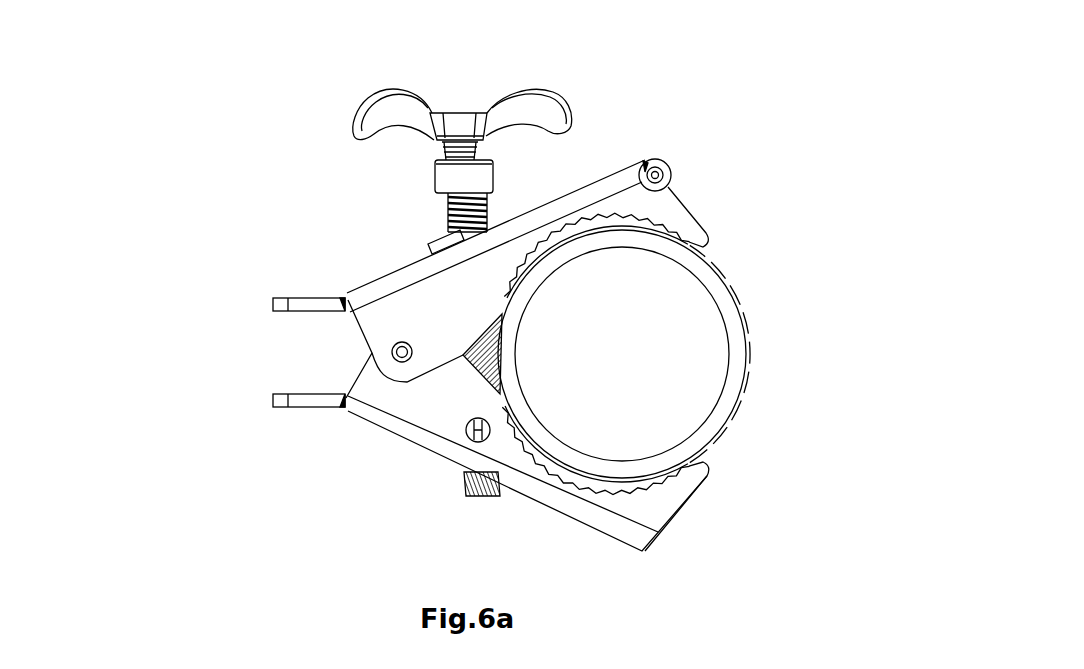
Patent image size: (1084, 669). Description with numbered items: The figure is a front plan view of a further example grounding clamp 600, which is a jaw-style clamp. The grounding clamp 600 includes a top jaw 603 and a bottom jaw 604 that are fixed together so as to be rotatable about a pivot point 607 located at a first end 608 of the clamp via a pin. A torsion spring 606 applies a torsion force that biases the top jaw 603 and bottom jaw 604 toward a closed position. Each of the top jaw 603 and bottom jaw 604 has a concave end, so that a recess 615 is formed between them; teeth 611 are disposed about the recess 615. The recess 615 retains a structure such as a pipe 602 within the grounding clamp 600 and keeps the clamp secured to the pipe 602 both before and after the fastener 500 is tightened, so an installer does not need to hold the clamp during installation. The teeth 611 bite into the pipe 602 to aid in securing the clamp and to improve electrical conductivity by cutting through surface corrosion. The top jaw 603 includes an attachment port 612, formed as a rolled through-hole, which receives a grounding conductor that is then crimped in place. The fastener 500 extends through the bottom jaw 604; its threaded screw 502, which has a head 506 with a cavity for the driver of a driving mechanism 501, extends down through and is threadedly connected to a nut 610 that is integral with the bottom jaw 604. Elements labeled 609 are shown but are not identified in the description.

The fastener 500 is at (372, 162).
The driving mechanism 501 is at (540, 104).
The threaded screw 502 is at (448, 208).
The head 506 is at (495, 174).
The grounding clamp 600 is at (668, 98).
The pipe 602 is at (733, 382).
The top jaw 603 is at (686, 218).
The bottom jaw 604 is at (657, 510).
The torsion spring 606 is at (350, 293).
The pivot point 607 is at (392, 352).
The first end 608 is at (222, 330).
The pins 609 is at (273, 303).
The nut 610 is at (467, 437).
The teeth 611 is at (537, 258).
The attachment port 612 is at (664, 168).
The recess 615 is at (732, 420).